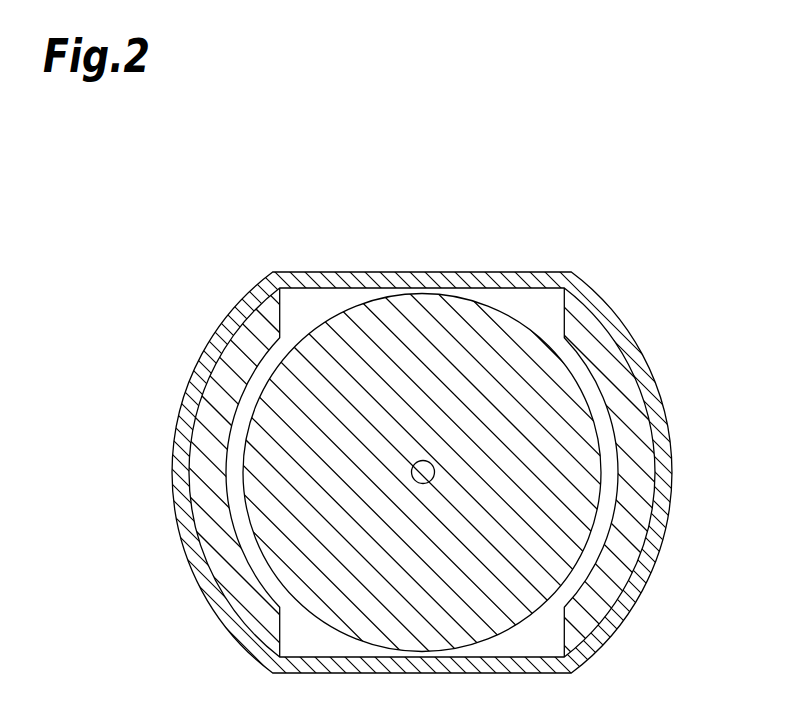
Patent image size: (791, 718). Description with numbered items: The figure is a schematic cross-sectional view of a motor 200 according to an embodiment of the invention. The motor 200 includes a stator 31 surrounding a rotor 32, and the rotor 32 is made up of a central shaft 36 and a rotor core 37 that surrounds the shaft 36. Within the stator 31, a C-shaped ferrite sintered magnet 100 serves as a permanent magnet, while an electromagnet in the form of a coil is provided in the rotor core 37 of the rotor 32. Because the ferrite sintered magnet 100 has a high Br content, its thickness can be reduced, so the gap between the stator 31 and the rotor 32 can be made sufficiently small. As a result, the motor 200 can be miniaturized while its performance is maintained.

The motor 200 is at (676, 211).
The stator 31 is at (662, 498).
The ferrite sintered magnet 100 is at (200, 480).
The rotor 32 is at (683, 270).
The shaft 36 is at (433, 468).
The rotor core 37 is at (563, 383).